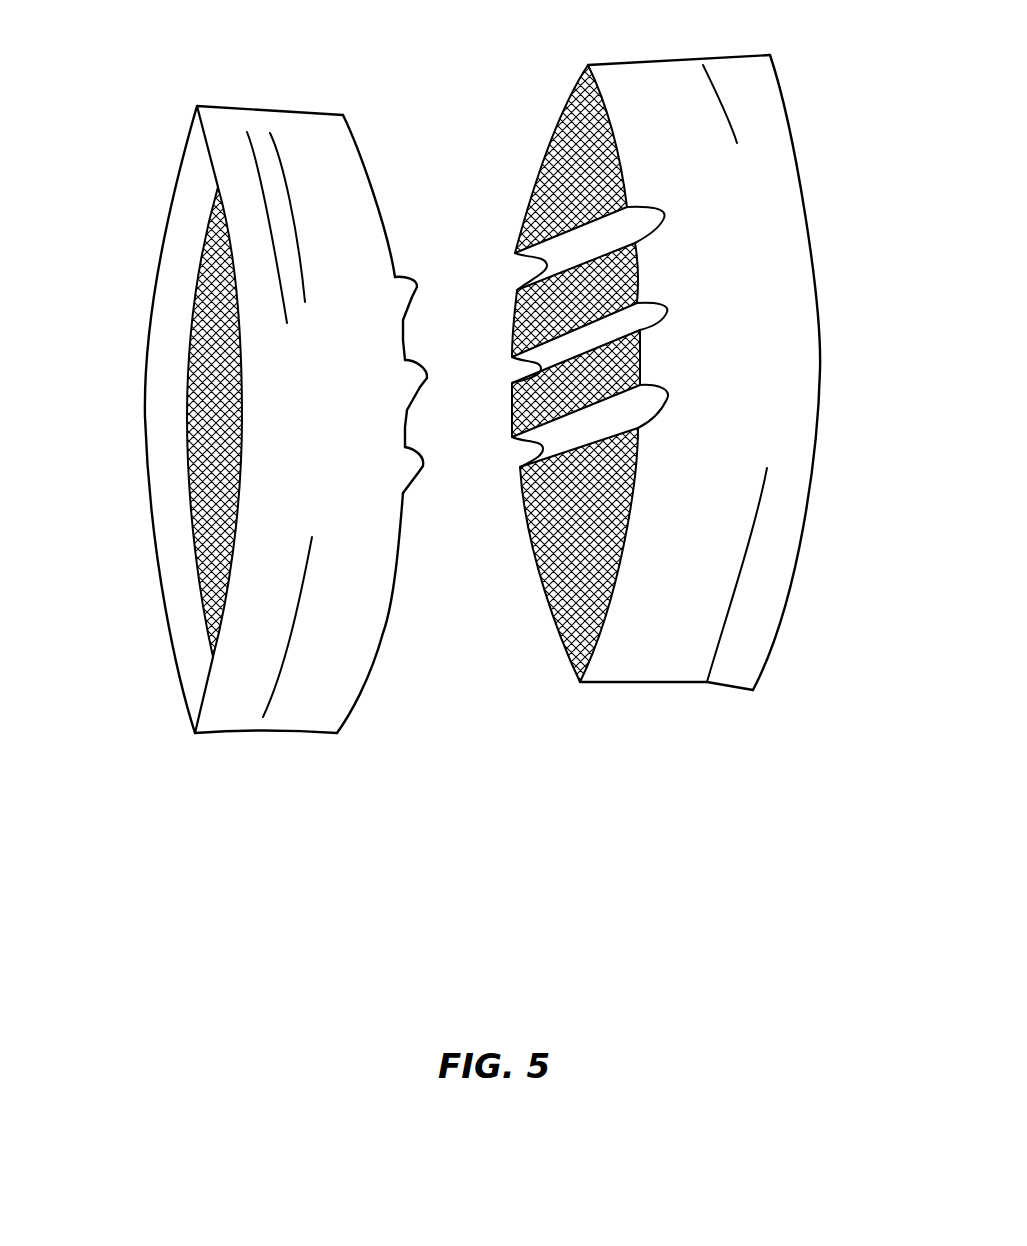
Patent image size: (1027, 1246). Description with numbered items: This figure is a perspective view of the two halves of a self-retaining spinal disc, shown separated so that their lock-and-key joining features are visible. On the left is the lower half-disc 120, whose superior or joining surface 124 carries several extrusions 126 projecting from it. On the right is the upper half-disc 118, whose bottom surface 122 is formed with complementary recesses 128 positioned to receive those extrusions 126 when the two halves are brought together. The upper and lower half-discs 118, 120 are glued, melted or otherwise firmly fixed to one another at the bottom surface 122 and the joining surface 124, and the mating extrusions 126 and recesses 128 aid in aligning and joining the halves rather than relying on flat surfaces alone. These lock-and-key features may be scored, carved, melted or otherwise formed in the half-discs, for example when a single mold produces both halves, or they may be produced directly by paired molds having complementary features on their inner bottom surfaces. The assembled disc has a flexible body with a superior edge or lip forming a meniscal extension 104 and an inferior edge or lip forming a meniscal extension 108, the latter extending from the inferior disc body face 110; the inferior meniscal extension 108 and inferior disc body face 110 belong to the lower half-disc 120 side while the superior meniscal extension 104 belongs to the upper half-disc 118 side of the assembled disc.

The meniscal extension 104 is at (773, 147).
The meniscal extension 108 is at (195, 215).
The inferior disc body face 110 is at (218, 482).
The upper half-disc 118 is at (637, 627).
The lower half-disc 120 is at (315, 647).
The bottom surface 122 is at (563, 107).
The joining surface 124 is at (383, 630).
The extrusions 126 is at (417, 288).
The recesses 128 is at (633, 220).